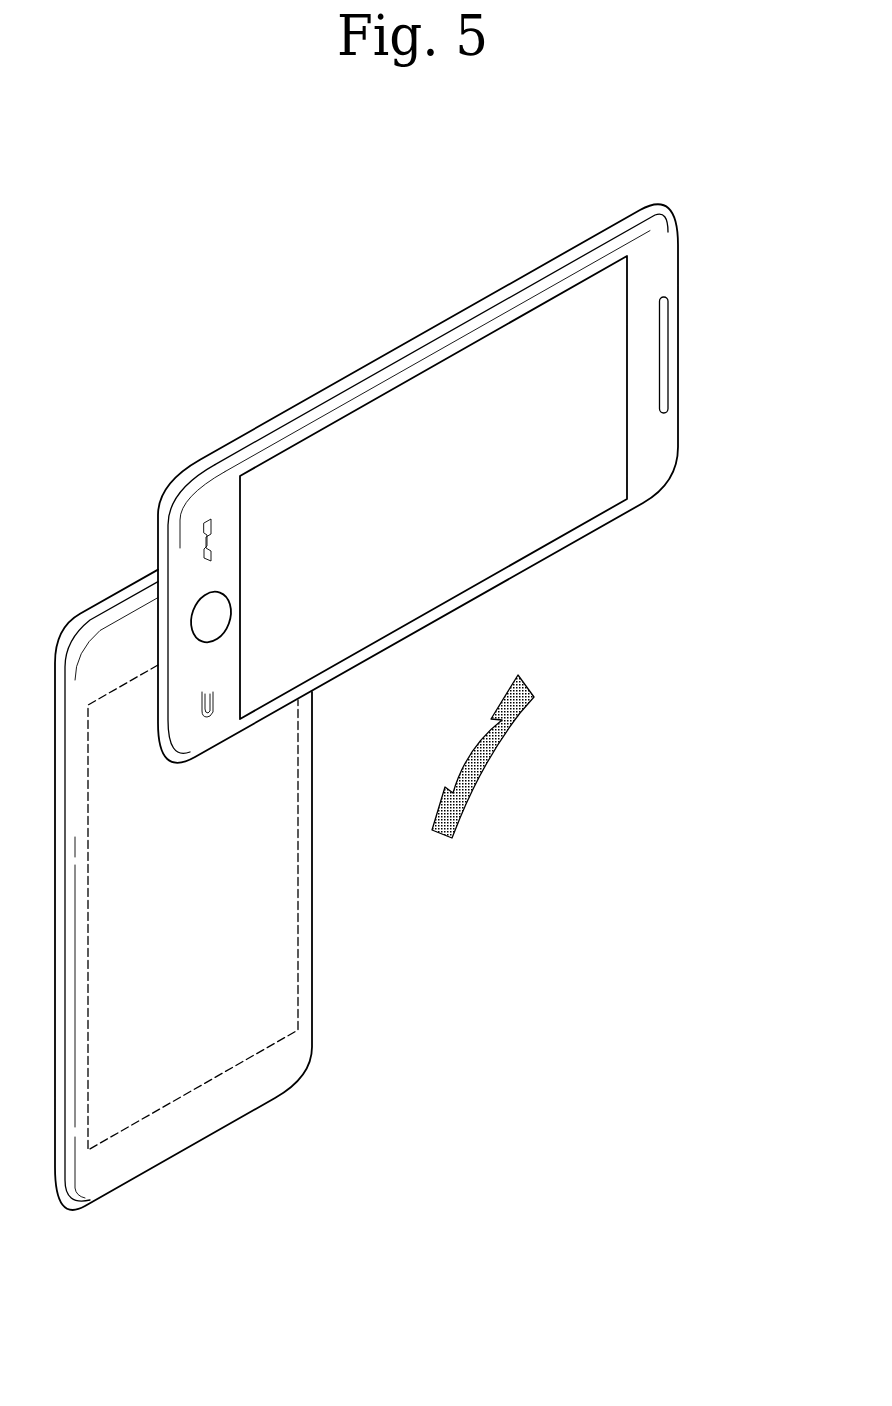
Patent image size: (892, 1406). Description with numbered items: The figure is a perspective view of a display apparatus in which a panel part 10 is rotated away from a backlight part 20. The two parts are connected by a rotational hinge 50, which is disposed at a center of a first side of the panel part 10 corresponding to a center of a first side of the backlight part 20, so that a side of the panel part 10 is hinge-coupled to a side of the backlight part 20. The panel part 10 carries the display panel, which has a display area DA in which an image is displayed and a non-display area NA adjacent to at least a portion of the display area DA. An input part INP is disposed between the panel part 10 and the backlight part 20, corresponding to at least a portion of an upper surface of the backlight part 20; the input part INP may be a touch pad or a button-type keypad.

The panel part 10 is at (314, 396).
The backlight part 20 is at (318, 874).
The rotational hinge 50 is at (212, 617).
The display area DA is at (465, 549).
The non-display area NA is at (662, 262).
The input part INP is at (245, 815).